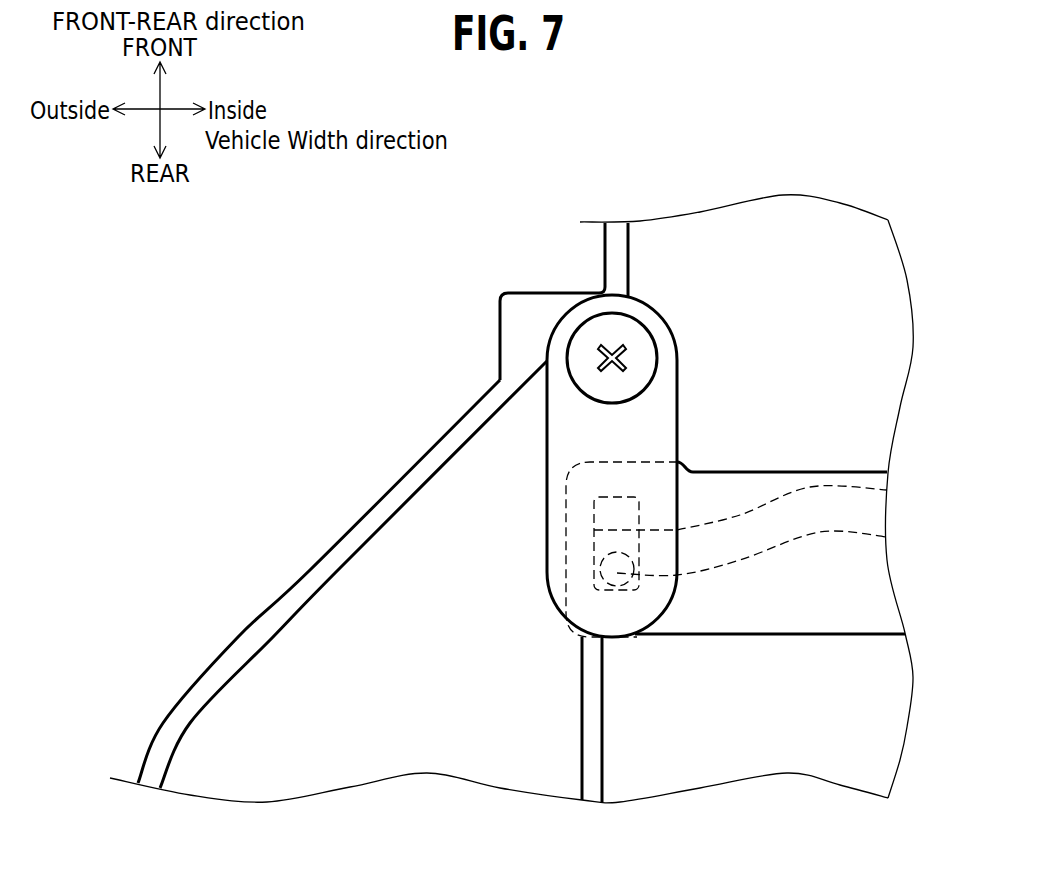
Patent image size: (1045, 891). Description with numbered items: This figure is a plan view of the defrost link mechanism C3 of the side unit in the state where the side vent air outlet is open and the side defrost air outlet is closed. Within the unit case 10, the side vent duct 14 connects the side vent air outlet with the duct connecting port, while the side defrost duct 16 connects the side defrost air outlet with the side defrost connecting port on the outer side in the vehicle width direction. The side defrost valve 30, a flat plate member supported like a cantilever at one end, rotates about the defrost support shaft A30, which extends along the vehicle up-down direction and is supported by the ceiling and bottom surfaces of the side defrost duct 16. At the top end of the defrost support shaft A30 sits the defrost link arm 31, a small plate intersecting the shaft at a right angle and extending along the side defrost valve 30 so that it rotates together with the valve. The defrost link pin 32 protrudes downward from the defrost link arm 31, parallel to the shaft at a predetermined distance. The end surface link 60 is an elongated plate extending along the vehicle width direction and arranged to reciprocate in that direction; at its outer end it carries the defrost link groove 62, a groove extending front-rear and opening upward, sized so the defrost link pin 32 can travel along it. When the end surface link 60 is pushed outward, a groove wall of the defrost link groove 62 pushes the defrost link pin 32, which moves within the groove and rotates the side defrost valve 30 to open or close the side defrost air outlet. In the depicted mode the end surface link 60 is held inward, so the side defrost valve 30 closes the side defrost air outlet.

The side vent duct 14 is at (794, 378).
The side defrost duct 16 is at (396, 708).
The unit case 10 is at (330, 545).
The defrost link arm 31 is at (557, 532).
The side defrost valve 30 is at (590, 715).
The defrost support shaft A30 is at (607, 337).
The defrost link mechanism C3 is at (452, 353).
The defrost link groove 62 is at (887, 490).
The defrost link pin 32 is at (887, 537).
The end surface link 60 is at (783, 600).